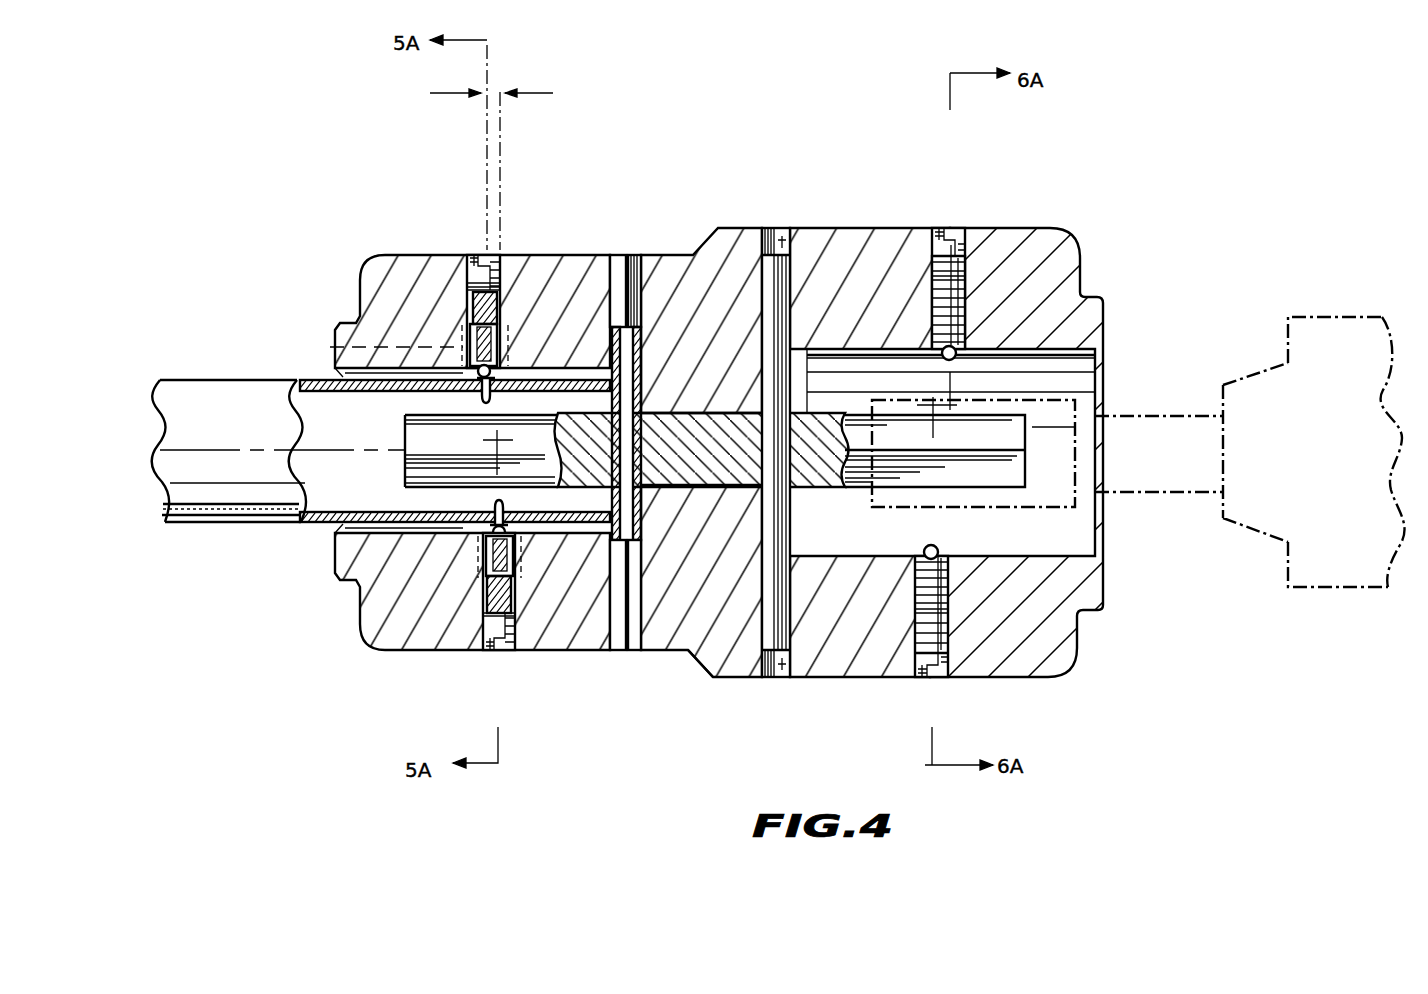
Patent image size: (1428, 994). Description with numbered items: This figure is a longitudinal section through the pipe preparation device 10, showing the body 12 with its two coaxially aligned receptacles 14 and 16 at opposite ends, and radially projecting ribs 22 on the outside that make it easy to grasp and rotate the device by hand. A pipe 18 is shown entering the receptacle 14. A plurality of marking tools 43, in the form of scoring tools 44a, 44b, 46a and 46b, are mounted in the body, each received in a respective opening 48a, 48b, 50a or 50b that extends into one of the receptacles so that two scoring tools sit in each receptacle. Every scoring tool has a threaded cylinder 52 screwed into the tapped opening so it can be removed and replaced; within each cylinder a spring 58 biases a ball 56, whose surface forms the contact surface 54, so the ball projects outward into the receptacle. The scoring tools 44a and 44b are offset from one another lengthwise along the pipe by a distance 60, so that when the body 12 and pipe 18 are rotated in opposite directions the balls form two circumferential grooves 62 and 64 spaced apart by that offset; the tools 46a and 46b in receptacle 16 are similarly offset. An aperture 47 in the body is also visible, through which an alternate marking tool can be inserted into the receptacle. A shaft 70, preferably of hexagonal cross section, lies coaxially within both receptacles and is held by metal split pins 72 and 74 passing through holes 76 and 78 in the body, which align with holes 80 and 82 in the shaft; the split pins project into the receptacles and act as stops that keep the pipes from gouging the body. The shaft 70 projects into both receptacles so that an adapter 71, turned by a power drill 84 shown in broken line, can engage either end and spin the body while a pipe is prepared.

The pipe preparation device 10 is at (1134, 176).
The body 12 is at (683, 597).
The receptacle 14 is at (340, 523).
The receptacle 16 is at (962, 543).
The pipe 18 is at (228, 400).
The radially projecting ribs 22 is at (731, 672).
The marking tools 43 is at (473, 283).
The scoring tool 44a is at (478, 256).
The scoring tool 44b is at (493, 652).
The scoring tool 46a is at (940, 228).
The scoring tool 46b is at (947, 640).
The aperture 47 is at (330, 345).
The opening 48a is at (500, 256).
The opening 48b is at (505, 655).
The opening 50a is at (960, 228).
The opening 50b is at (937, 677).
The threaded cylinder 52 is at (476, 305).
The contact surface 54 is at (476, 343).
The ball 56 is at (487, 365).
The spring 58 is at (480, 550).
The offset distance 60 is at (493, 90).
The circumferential groove 62 is at (480, 390).
The circumferential groove 64 is at (480, 513).
The shaft 70 is at (1013, 477).
The adapter 71 is at (1170, 416).
The split pin 72 is at (631, 262).
The split pin 74 is at (768, 280).
The hole 76 is at (612, 270).
The hole 78 is at (778, 236).
The hole 80 is at (651, 405).
The hole 82 is at (800, 408).
The power drill 84 is at (1350, 317).